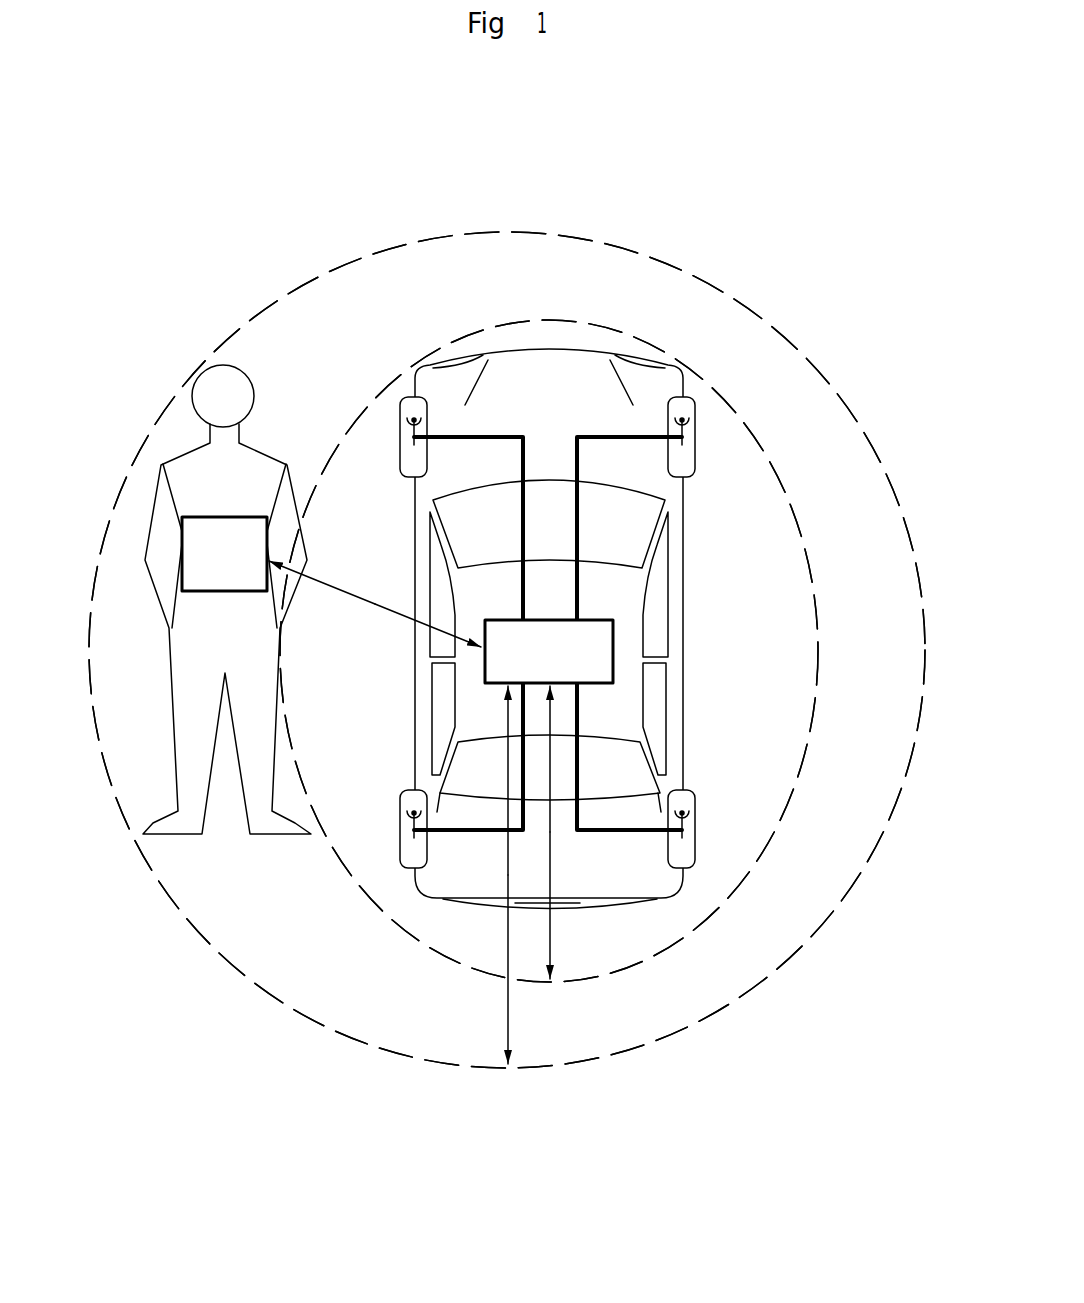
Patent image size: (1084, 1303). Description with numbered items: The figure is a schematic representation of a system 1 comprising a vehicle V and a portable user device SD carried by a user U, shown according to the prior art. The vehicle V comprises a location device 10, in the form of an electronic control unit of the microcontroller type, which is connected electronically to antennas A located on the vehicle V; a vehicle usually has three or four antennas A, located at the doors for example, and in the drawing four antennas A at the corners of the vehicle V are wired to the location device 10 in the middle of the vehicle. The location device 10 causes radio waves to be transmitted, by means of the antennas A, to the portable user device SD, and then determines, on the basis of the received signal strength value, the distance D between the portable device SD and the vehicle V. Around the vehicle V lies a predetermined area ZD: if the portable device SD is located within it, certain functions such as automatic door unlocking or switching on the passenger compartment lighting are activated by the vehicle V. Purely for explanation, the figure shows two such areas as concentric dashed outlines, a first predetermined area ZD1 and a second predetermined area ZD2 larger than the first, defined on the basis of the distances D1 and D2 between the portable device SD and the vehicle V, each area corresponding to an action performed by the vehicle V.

The system 1 is at (320, 193).
The vehicle V is at (549, 347).
The antenna A is at (405, 417).
The location device 10 is at (583, 648).
The user U is at (207, 393).
The portable user device SD is at (192, 542).
The distance D is at (375, 604).
The first distance D1 is at (567, 832).
The second distance D2 is at (489, 875).
The predetermined area ZD is at (748, 298).
The first predetermined area ZD1 is at (660, 953).
The second predetermined area ZD2 is at (625, 247).